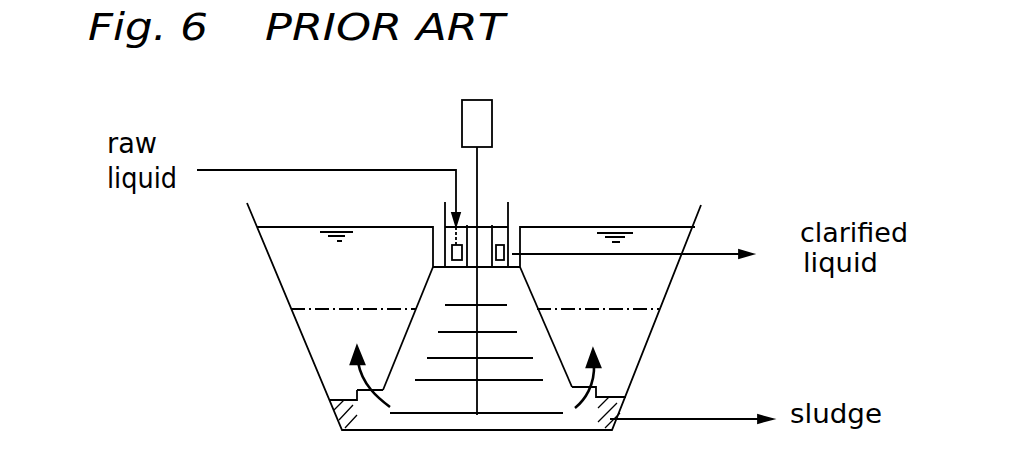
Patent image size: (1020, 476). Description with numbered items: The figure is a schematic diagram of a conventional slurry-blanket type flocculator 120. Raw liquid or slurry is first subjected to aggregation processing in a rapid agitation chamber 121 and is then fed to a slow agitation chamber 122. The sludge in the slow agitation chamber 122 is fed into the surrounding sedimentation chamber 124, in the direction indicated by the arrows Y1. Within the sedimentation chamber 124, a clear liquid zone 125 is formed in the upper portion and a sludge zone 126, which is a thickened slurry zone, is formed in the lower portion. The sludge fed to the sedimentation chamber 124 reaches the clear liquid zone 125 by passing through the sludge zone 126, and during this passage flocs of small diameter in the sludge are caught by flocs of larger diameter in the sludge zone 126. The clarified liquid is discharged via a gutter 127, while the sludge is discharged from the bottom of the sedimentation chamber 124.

The slurry-blanket type flocculator 120 is at (268, 257).
The rapid agitation chamber 121 is at (499, 244).
The slow agitation chamber 122 is at (408, 352).
The sedimentation chamber 124 is at (668, 282).
The clear liquid zone 125 is at (332, 282).
The sludge zone 126 is at (614, 350).
The gutter 127 is at (517, 240).
The arrows Y1 is at (357, 390).